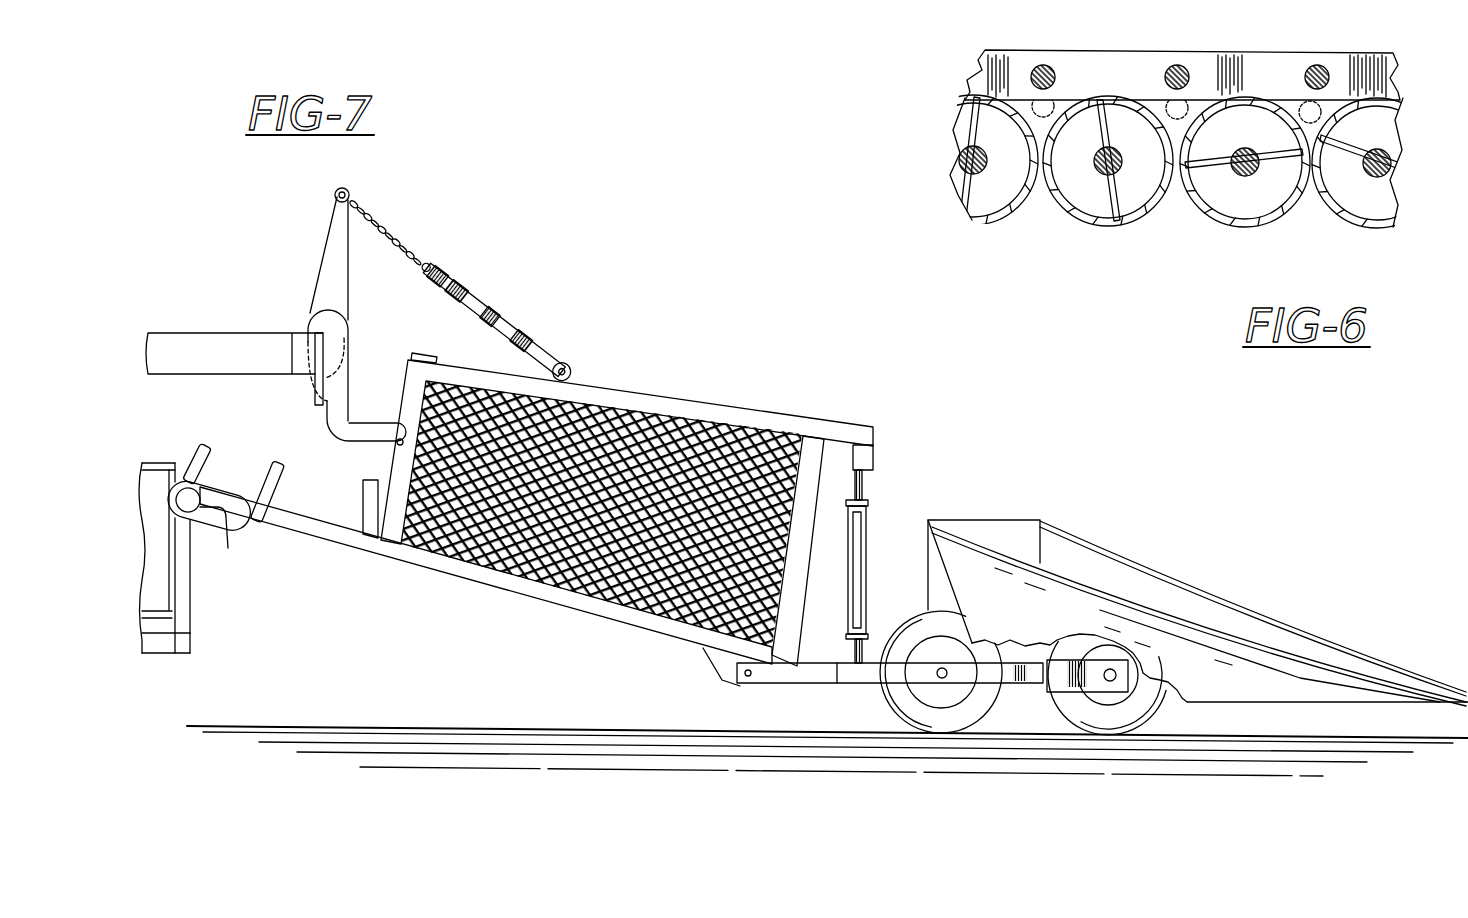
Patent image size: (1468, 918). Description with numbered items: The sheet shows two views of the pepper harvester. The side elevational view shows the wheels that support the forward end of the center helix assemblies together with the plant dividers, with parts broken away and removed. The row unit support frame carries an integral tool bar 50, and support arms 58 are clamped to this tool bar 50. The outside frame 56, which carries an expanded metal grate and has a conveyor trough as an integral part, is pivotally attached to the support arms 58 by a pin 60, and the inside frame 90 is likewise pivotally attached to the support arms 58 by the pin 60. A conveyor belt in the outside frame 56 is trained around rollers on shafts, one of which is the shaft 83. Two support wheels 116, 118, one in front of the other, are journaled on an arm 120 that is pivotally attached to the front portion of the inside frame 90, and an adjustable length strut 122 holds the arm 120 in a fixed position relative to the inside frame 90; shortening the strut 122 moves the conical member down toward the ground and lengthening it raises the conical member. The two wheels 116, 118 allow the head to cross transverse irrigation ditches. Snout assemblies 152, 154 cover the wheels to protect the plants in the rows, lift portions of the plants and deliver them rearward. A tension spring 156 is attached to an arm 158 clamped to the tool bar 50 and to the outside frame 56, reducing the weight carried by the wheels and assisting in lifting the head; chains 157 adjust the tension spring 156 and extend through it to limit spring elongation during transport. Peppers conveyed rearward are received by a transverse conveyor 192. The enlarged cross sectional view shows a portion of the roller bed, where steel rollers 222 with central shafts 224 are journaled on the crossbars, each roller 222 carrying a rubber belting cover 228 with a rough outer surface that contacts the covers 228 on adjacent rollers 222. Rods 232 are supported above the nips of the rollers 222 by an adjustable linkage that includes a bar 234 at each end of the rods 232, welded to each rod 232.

In FIG. 7, the tool bar 50 is at (300, 335).
In FIG. 7, the outside frame 56 is at (440, 554).
In FIG. 7, the support arms 58 is at (330, 397).
In FIG. 7, the pin 60 is at (380, 445).
In FIG. 7, the shaft 83 is at (213, 507).
In FIG. 7, the inside frame 90 is at (840, 426).
In FIG. 7, the support wheel 116 is at (945, 718).
In FIG. 7, the support wheel 118 is at (1085, 720).
In FIG. 7, the arm 120 is at (852, 676).
In FIG. 7, the adjustable length strut 122 is at (868, 523).
In FIG. 7, the snout assembly 152 is at (1242, 697).
In FIG. 7, the snout assembly 154 is at (1017, 518).
In FIG. 7, the tension spring 156 is at (527, 328).
In FIG. 7, the chains 157 is at (413, 253).
In FIG. 7, the arm 158 is at (291, 252).
In FIG. 7, the transverse conveyor 192 is at (168, 592).
In FIG. 6, the steel rollers 222 is at (1125, 187).
In FIG. 6, the central shafts 224 is at (955, 162).
In FIG. 6, the rubber belting cover 228 is at (1208, 213).
In FIG. 6, the rods 232 is at (1162, 76).
In FIG. 6, the bar 234 is at (1258, 66).